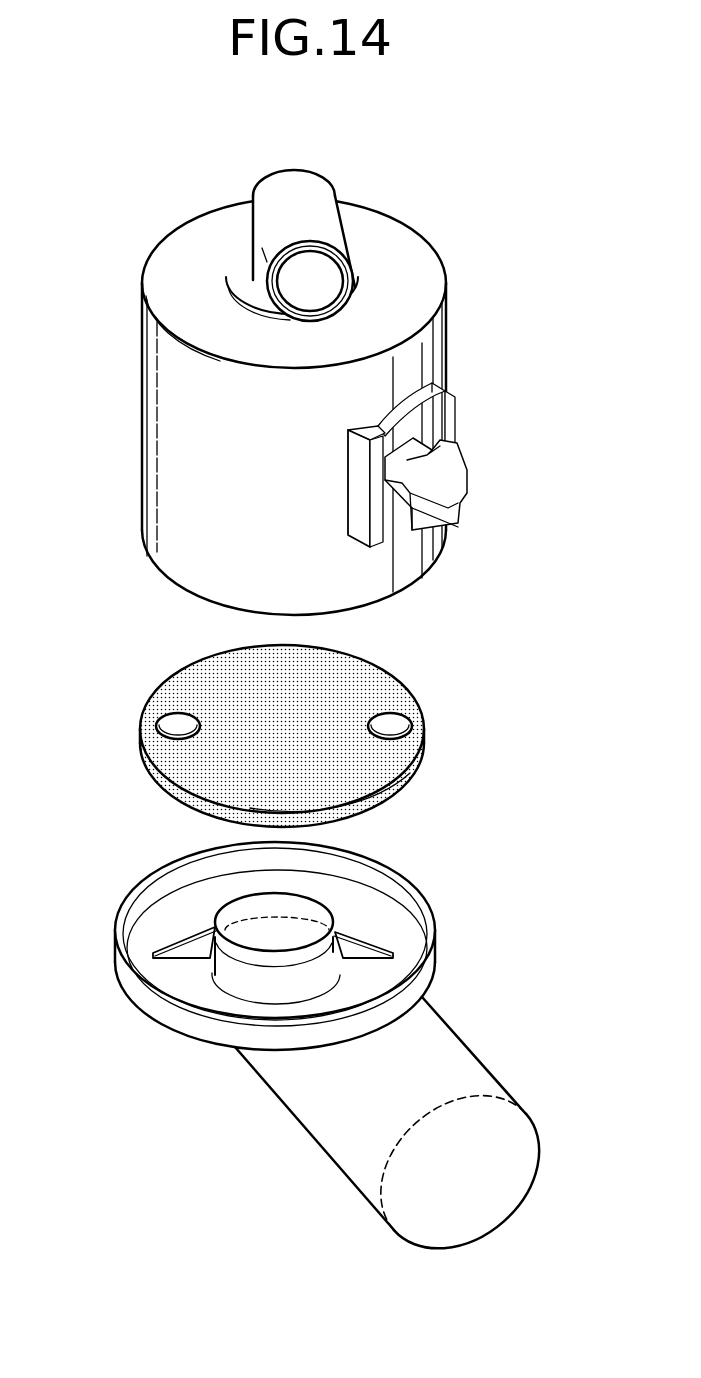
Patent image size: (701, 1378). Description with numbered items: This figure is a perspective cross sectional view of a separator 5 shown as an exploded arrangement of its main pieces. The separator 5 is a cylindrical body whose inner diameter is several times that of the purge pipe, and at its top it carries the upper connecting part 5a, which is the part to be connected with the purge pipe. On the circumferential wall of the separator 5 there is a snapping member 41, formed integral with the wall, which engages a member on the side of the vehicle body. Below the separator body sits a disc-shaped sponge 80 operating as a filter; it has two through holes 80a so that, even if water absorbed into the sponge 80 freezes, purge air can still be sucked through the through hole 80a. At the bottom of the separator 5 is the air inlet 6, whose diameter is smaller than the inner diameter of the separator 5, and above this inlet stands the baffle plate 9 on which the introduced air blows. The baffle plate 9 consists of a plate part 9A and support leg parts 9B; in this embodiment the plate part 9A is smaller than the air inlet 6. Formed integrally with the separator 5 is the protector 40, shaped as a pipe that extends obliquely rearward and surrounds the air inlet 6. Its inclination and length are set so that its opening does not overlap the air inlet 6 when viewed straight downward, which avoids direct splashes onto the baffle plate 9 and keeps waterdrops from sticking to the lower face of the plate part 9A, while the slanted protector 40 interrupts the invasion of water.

The separator 5 is at (447, 246).
The upper connecting part 5a is at (340, 218).
The snapping member 41 is at (468, 453).
The disc-shaped sponge 80 is at (291, 736).
The through hole 80a is at (170, 720).
The baffle plate 9 is at (221, 909).
The plate part 9A is at (250, 912).
The support leg part 9B is at (173, 937).
The air inlet 6 is at (262, 952).
The protector 40 is at (448, 1047).